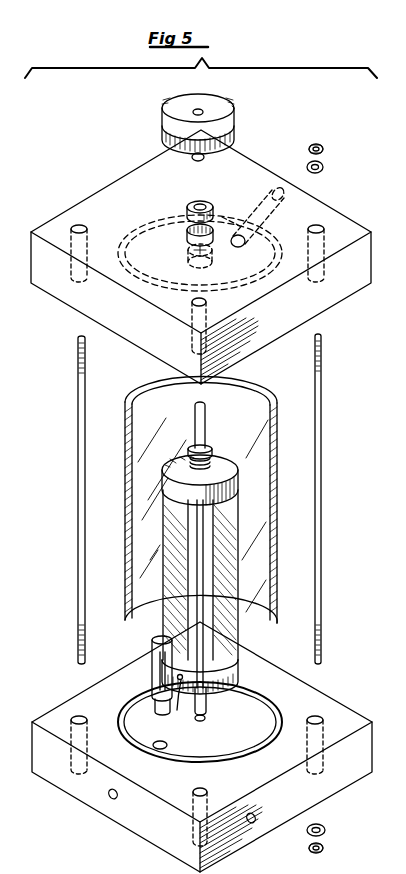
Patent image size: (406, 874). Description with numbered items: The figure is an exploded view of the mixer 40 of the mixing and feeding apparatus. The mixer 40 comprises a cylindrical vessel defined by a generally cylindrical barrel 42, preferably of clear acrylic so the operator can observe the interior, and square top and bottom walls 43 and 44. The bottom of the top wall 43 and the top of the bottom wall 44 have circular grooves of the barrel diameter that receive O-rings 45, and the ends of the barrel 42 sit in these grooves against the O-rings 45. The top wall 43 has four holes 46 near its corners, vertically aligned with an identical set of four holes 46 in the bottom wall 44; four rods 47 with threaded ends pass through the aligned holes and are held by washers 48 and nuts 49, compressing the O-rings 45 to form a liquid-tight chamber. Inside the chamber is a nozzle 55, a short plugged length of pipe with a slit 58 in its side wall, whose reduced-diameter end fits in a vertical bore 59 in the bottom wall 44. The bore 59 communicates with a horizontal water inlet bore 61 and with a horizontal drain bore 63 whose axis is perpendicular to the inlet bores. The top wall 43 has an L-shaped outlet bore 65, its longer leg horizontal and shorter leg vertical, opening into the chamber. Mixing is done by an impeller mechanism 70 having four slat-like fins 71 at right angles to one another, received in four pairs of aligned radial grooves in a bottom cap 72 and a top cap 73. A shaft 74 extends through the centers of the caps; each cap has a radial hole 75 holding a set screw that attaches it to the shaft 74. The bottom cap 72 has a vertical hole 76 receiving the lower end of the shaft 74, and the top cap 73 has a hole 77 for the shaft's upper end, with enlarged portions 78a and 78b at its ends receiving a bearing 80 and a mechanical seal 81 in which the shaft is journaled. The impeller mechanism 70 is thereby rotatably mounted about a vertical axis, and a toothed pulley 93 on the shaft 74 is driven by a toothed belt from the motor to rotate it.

The mixer 40 is at (36, 683).
The barrel 42 is at (260, 386).
The top wall 43 is at (362, 265).
The bottom wall 44 is at (366, 755).
The O-rings 45 is at (140, 222).
The holes 46 is at (192, 158).
The rods 47 is at (320, 145).
The washers 48 is at (323, 166).
The nuts 49 is at (325, 847).
The nozzle 55 is at (140, 650).
The slit 58 is at (150, 662).
The bore 59 is at (168, 745).
The water inlet bore 61 is at (254, 824).
The drain bore 63 is at (110, 798).
The outlet bore 65 is at (264, 220).
The impeller mechanism 70 is at (254, 667).
The fins 71 is at (166, 578).
The bottom cap 72 is at (266, 670).
The top cap 73 is at (229, 464).
The shaft 74 is at (208, 700).
The hole 75 is at (175, 705).
The hole 76 is at (206, 718).
The hole 77 is at (187, 251).
The enlarged portion 78a is at (205, 226).
The enlarged portion 78b is at (192, 268).
The bearing 80 is at (192, 200).
The mechanical seal 81 is at (205, 442).
The toothed pulley 93 is at (186, 98).